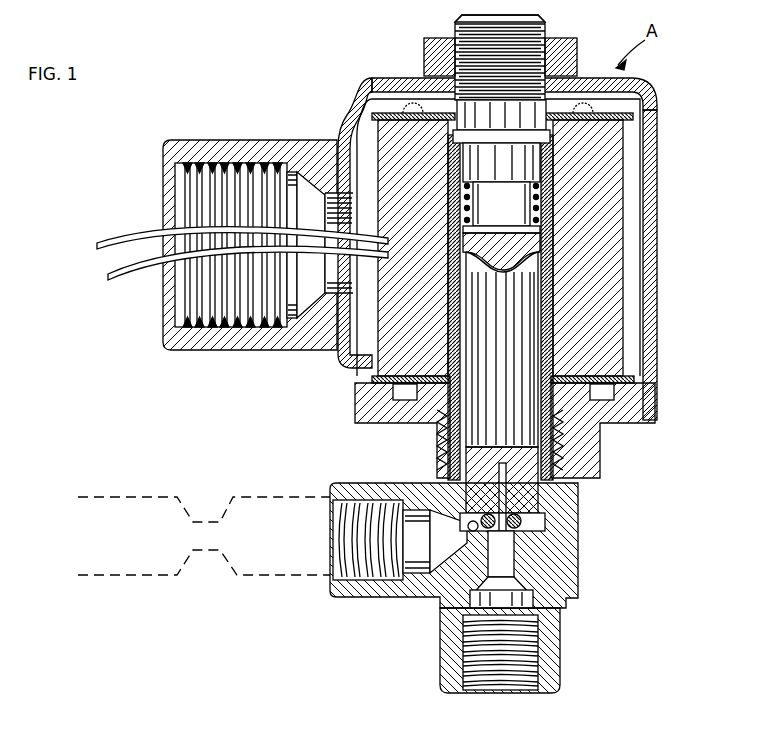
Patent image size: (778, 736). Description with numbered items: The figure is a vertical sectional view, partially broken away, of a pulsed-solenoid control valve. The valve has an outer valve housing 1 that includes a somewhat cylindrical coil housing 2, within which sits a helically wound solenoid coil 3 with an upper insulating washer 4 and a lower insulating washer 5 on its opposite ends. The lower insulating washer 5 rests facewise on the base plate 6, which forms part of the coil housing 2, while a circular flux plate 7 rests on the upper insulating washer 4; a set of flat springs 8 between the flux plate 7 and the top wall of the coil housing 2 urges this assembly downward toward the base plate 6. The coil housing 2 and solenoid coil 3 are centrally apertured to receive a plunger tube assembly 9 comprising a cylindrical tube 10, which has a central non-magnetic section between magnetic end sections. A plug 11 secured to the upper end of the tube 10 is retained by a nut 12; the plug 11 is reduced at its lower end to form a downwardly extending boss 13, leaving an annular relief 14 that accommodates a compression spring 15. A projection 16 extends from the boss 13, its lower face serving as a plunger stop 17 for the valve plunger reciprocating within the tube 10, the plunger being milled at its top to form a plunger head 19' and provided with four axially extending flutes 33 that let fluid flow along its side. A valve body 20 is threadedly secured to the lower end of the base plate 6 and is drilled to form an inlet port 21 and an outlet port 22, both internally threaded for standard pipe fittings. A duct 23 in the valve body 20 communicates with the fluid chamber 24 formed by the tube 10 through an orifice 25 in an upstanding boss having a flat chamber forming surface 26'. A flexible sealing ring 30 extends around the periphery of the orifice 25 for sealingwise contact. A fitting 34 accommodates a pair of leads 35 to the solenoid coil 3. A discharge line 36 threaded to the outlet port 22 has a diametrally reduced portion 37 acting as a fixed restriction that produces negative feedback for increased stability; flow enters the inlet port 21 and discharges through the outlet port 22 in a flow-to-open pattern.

The outer valve housing 1 is at (526, 238).
The coil housing 2 is at (657, 345).
The solenoid coil 3 is at (607, 330).
The upper insulating washer 4 is at (630, 125).
The lower insulating washer 5 is at (634, 377).
The base plate 6 is at (655, 421).
The flux plate 7 is at (612, 108).
The flat springs 8 is at (625, 92).
The plunger tube assembly 9 is at (509, 57).
The cylindrical tube 10 is at (563, 297).
The plug 11 is at (470, 17).
The nut 12 is at (428, 57).
The boss 13 is at (641, 208).
The annular relief 14 is at (547, 192).
The compression spring 15 is at (552, 212).
The projection 16 is at (560, 229).
The plunger stop 17 is at (541, 250).
The plunger head 19' is at (599, 258).
The valve body 20 is at (504, 571).
The inlet port 21 is at (510, 605).
The outlet port 22 is at (447, 533).
The duct 23 is at (512, 572).
The fluid chamber 24 is at (572, 505).
The orifice 25 is at (510, 530).
The flat chamber forming surface 26' is at (435, 591).
The sealing ring 30 is at (525, 523).
The flutes 33 is at (493, 382).
The fitting 34 is at (277, 140).
The leads 35 is at (143, 226).
The discharge line 36 is at (273, 577).
The diametrally reduced portion 37 is at (207, 520).